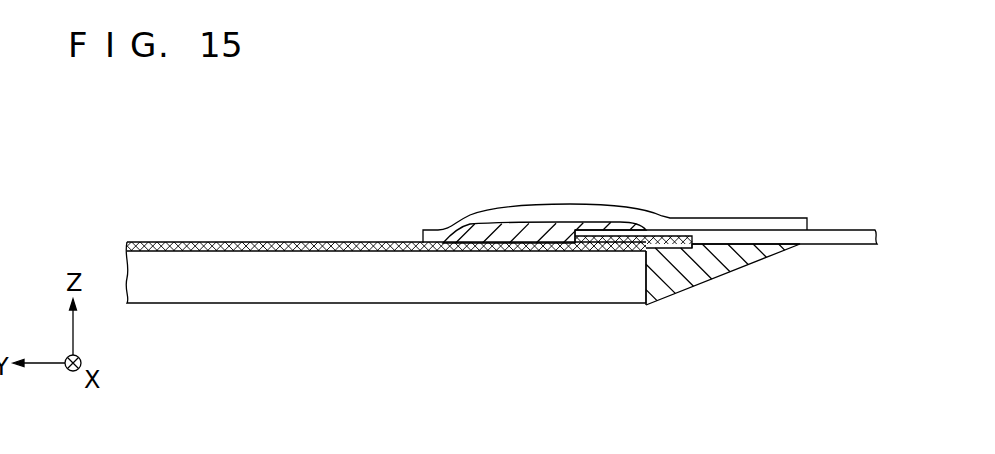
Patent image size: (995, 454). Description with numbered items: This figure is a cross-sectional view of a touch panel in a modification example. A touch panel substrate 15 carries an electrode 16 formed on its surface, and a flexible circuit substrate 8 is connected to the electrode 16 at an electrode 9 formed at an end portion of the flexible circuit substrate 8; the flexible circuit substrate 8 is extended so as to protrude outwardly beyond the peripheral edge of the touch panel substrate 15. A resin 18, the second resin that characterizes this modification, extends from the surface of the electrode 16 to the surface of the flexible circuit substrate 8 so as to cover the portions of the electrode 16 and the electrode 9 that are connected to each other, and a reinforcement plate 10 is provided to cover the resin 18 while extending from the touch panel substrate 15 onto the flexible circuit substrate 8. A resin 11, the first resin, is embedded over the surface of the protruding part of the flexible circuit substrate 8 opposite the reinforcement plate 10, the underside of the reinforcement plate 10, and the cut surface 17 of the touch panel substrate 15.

The flexible circuit substrate 8 is at (823, 246).
The electrode 9 is at (595, 229).
The reinforcement plate 10 is at (668, 218).
The resin 11 is at (716, 281).
The touch panel substrate 15 is at (275, 277).
The electrode 16 is at (518, 253).
The cut surface 17 is at (650, 277).
The resin 18 is at (521, 270).